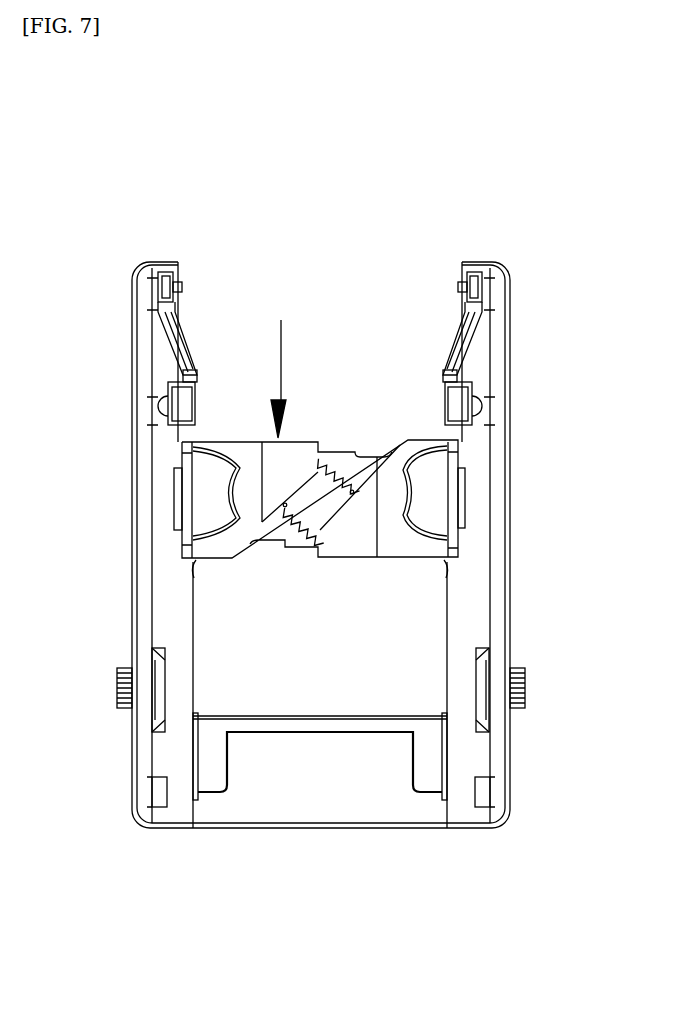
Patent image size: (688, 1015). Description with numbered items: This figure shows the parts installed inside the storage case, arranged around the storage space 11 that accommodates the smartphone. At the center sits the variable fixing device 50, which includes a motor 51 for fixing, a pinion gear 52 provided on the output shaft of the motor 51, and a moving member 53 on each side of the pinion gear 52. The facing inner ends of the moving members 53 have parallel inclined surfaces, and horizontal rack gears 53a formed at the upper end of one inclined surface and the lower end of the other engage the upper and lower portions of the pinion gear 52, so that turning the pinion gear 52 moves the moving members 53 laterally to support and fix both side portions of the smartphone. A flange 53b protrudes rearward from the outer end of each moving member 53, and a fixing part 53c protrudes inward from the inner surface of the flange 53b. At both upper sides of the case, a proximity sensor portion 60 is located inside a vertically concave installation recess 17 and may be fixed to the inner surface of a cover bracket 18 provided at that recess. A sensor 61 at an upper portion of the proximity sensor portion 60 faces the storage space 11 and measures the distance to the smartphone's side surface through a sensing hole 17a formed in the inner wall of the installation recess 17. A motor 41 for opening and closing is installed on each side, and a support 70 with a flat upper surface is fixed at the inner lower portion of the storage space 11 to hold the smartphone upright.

The storage space 11 is at (246, 351).
The installation recess 17 is at (172, 592).
The sensing hole 17a is at (187, 292).
The cover bracket 18 is at (147, 455).
The motor for opening and closing 41 is at (158, 672).
The variable fixing device 50 is at (281, 320).
The motor for fixing 51 is at (365, 470).
The pinion gear 52 is at (323, 492).
The moving member 53 is at (403, 543).
The rack gear 53a is at (300, 555).
The flange 53b is at (453, 462).
The fixing part 53c is at (428, 492).
The proximity sensor portion 60 is at (173, 335).
The sensor 61 is at (180, 286).
The support 70 is at (325, 725).